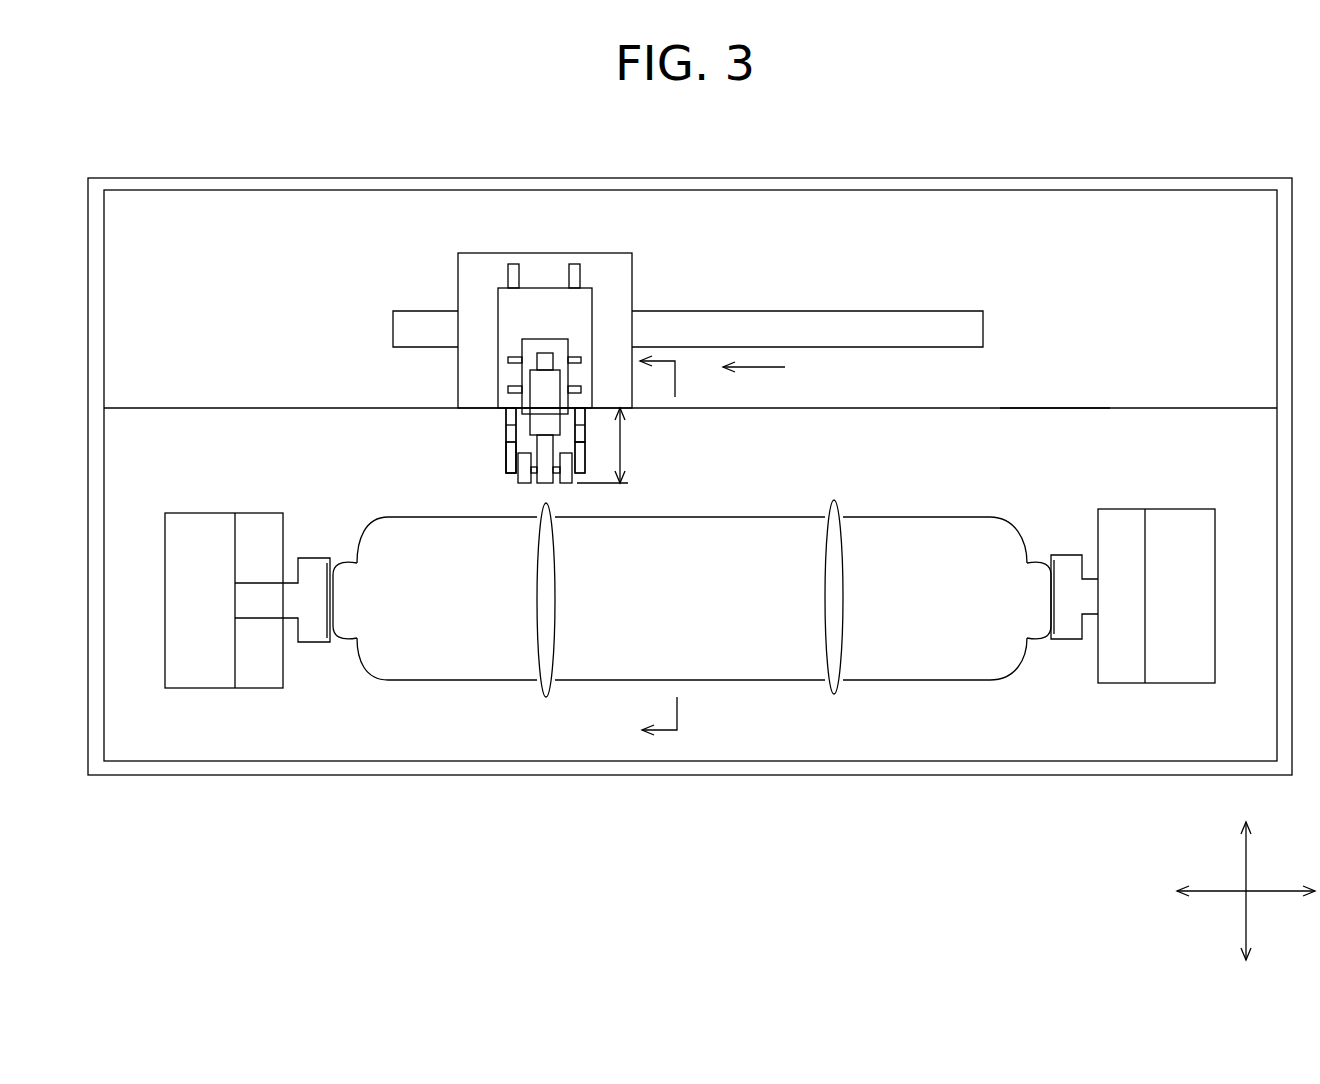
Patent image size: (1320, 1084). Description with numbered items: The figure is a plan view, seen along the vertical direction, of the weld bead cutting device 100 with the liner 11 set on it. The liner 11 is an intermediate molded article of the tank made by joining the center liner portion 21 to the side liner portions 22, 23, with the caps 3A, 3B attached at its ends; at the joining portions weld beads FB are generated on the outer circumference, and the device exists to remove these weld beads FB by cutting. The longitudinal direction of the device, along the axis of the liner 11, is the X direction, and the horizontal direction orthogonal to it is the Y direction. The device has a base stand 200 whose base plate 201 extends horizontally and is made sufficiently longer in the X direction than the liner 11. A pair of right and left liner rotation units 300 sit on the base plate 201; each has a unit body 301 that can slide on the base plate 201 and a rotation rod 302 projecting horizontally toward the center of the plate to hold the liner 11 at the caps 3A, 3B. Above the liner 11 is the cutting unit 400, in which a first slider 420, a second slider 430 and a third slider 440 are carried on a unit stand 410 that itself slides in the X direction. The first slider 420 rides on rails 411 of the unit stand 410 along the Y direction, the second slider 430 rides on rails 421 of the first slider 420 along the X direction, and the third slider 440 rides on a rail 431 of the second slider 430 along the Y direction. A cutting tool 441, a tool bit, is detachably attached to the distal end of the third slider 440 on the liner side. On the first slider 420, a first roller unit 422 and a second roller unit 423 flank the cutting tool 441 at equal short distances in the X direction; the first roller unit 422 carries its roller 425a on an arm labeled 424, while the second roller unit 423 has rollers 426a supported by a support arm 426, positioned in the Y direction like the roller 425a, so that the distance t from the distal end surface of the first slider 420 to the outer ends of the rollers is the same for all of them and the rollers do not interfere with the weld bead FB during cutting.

The weld bead cutting device 100 is at (816, 176).
The base stand 200 is at (1127, 405).
The base plate 201 is at (1057, 427).
The liner rotation unit 300 is at (690, 590).
The unit body 301 is at (203, 673).
The rotation rod 302 is at (258, 598).
The cap 3A is at (1036, 580).
The cap 3B is at (345, 580).
The liner 11 is at (690, 591).
The center liner portion 21 is at (755, 655).
The side liner portion 22 is at (472, 657).
The side liner portion 23 is at (955, 655).
The weld bead FB is at (549, 638).
The cutting unit 400 is at (577, 405).
The unit stand 410 is at (480, 270).
The rails 411 is at (575, 262).
The first slider 420 is at (577, 301).
The rails 421 is at (508, 360).
The first roller unit 422 is at (590, 464).
The second roller unit 423 is at (505, 465).
The right upper bracket 424 is at (581, 447).
The roller 425a is at (566, 486).
The support arm 426 is at (507, 416).
The roller 426a is at (511, 478).
The second slider 430 is at (522, 346).
The rail 431 is at (543, 352).
The third slider 440 is at (543, 420).
The cutting tool 441 is at (545, 486).
The distance t is at (621, 440).
The X direction X is at (1268, 888).
The Y direction Y is at (1243, 862).